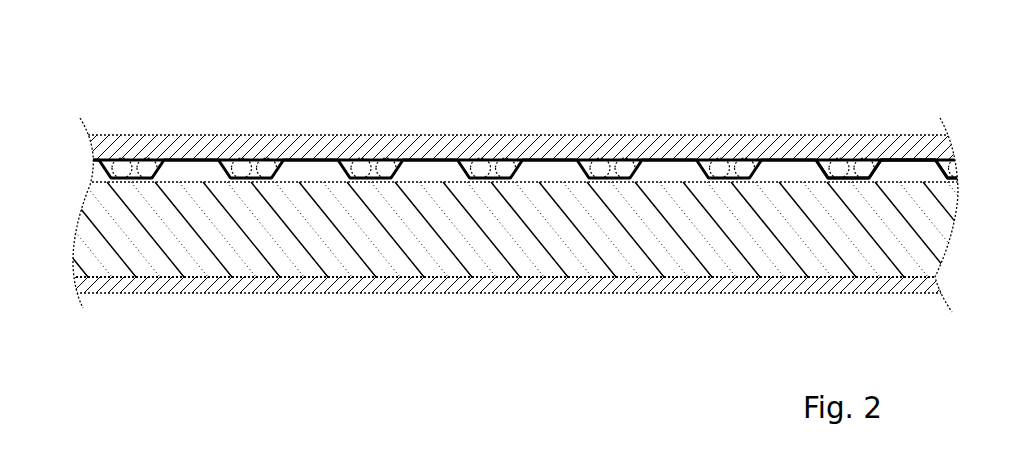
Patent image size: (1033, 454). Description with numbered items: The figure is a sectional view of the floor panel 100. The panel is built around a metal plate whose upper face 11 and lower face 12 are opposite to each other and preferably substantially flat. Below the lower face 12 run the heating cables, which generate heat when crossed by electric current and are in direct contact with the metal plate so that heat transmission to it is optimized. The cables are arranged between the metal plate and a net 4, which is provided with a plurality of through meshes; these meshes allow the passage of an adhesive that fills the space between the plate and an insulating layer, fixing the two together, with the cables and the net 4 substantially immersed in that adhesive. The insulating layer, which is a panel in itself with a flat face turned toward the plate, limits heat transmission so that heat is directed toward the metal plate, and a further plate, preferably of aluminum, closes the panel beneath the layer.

The floor panel 100 is at (146, 108).
The face 11 is at (485, 135).
The face 12 is at (515, 160).
The net 4 is at (372, 185).